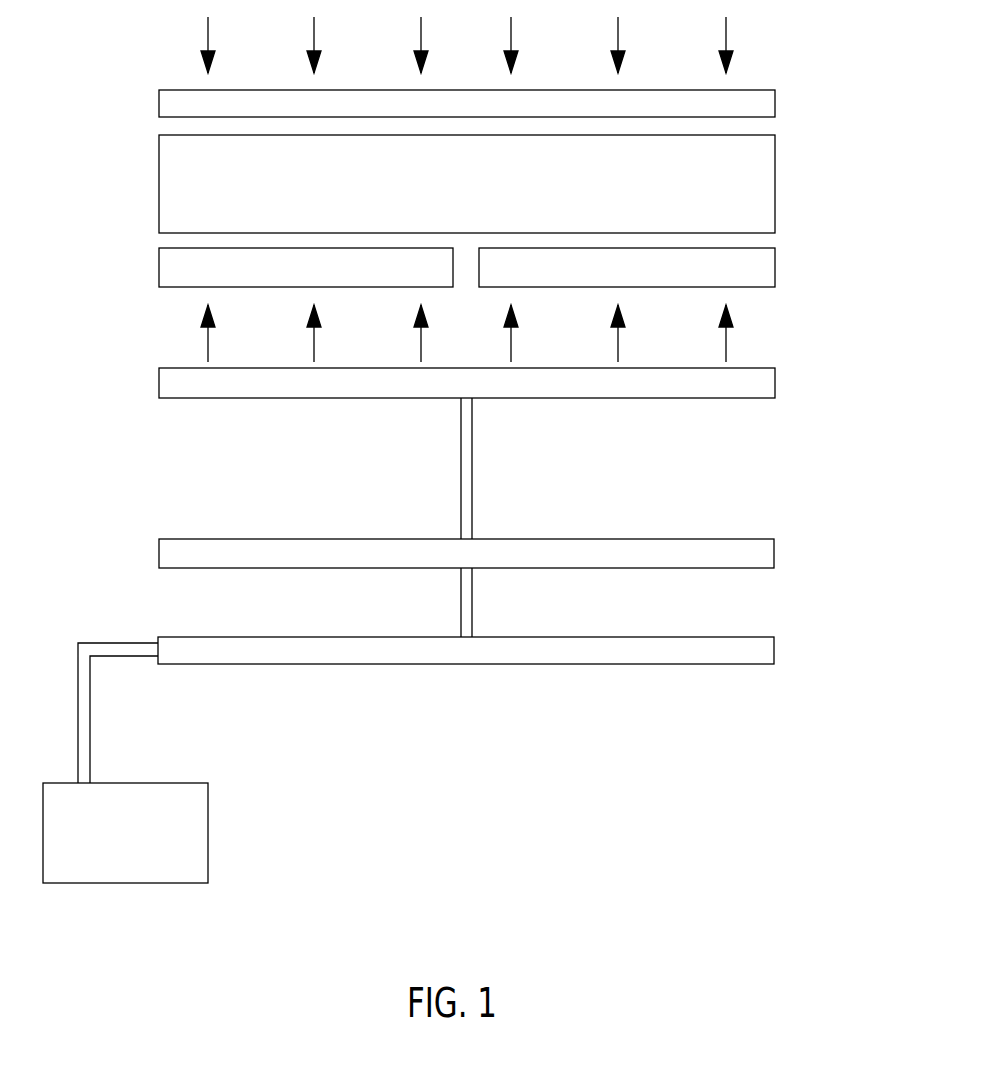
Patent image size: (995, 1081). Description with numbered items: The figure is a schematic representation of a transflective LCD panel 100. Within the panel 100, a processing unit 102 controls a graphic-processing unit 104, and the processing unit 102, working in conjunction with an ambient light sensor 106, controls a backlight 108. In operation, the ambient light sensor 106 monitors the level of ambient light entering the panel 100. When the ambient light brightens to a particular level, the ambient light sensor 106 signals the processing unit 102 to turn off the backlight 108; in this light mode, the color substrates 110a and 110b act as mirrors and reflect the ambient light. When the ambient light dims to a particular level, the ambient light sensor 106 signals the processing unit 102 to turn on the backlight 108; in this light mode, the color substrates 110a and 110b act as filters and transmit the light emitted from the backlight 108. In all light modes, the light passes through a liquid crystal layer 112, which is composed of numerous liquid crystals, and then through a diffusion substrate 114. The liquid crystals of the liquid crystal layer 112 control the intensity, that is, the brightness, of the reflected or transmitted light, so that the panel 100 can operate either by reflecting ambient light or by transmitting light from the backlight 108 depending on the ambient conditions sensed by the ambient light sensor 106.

The panel 100 is at (463, 469).
The processing unit 102 is at (762, 652).
The graphic-processing unit 104 is at (762, 555).
The ambient light sensor 106 is at (190, 820).
The backlight 108 is at (177, 382).
The color substrate 110a is at (168, 280).
The color substrate 110b is at (762, 271).
The liquid crystal layer 112 is at (172, 195).
The diffusion substrate 114 is at (173, 100).